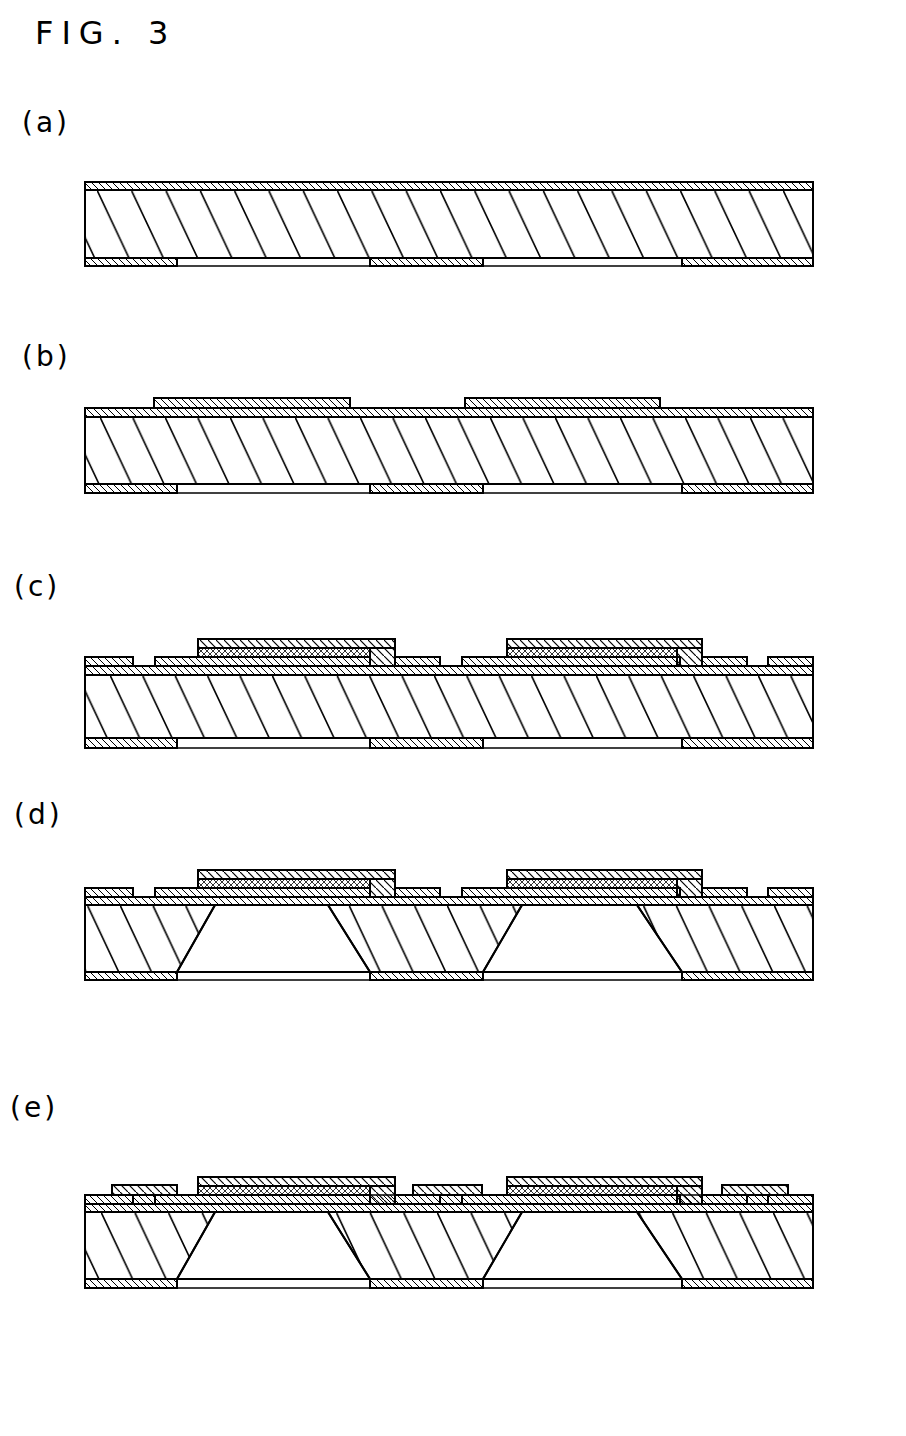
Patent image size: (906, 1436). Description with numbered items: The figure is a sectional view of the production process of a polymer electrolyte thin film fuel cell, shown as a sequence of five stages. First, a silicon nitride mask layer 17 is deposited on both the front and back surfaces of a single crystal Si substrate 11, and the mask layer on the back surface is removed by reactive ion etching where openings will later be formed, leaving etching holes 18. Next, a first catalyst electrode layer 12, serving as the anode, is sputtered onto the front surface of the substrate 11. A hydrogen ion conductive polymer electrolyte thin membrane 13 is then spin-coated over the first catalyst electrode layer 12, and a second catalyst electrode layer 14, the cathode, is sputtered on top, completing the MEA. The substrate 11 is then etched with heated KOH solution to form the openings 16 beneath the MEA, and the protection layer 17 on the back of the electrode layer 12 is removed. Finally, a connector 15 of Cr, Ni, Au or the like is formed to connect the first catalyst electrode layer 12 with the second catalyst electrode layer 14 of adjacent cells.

The substrate 11 is at (576, 240).
The first catalyst electrode layer 12 is at (292, 398).
The hydrogen ion conductive polymer electrolyte thin membrane 13 is at (266, 645).
The second catalyst electrode layer 14 is at (358, 639).
The connector 15 is at (143, 1185).
The opening 16 is at (262, 962).
The mask layer 17 is at (488, 183).
The etching hole 18 is at (272, 266).